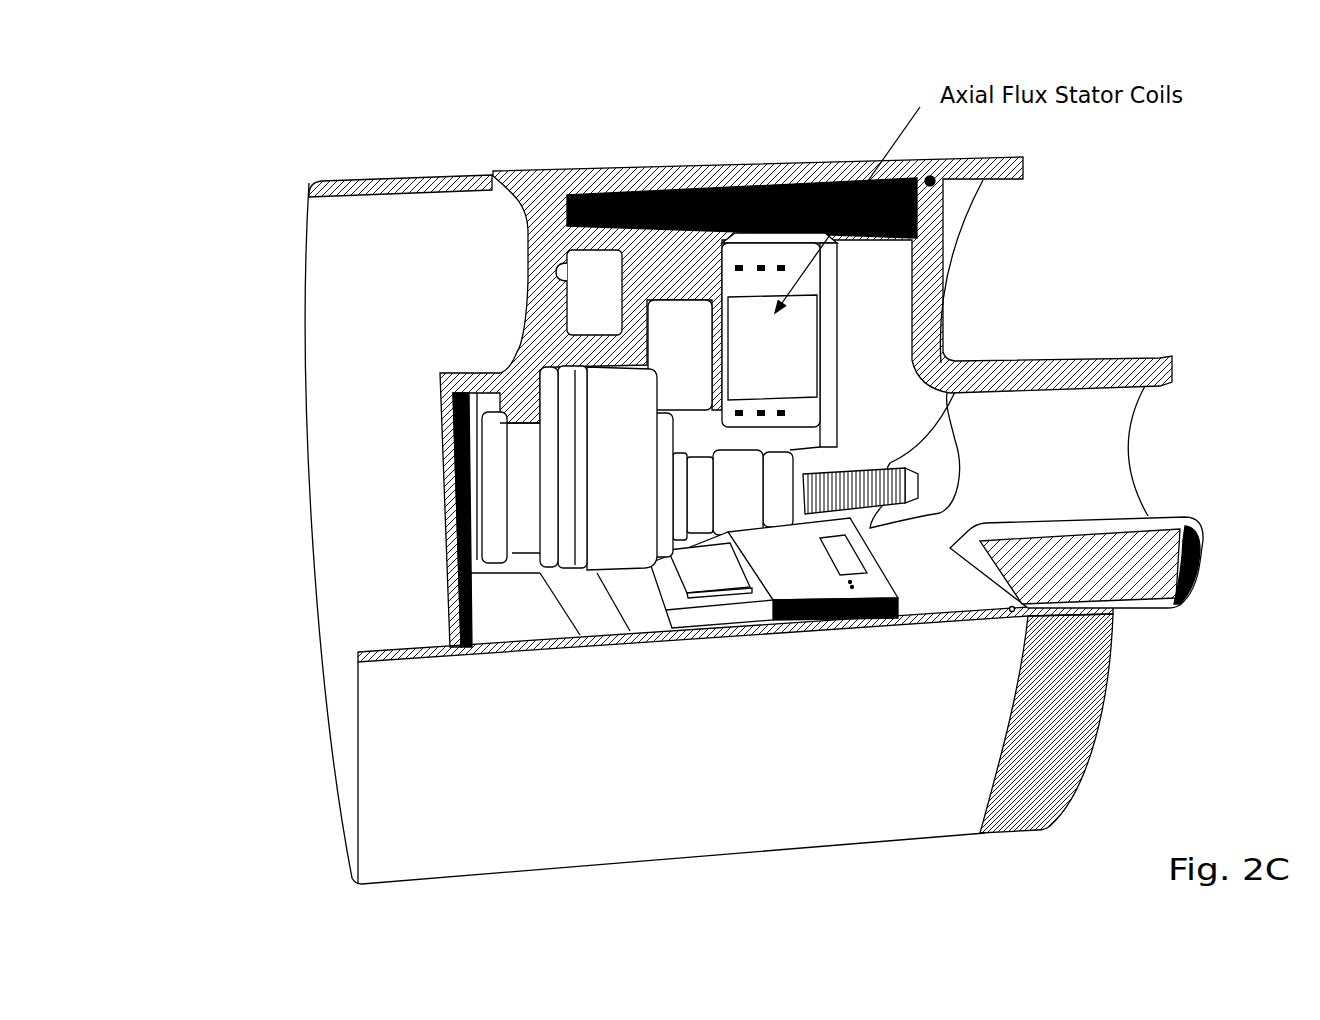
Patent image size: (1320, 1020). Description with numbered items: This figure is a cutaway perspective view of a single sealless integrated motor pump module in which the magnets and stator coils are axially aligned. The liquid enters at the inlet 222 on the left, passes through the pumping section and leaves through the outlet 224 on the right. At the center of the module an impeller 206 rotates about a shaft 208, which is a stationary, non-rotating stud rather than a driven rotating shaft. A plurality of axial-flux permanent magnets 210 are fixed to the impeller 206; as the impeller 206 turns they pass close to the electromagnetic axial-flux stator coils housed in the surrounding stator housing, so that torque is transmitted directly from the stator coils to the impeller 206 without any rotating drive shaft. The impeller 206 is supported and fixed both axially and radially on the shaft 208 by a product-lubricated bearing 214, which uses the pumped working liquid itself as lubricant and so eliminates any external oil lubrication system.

The impeller 206 is at (557, 397).
The shaft 208 is at (852, 473).
The permanent magnets 210 is at (700, 363).
The product-lubricated bearing 214 is at (766, 454).
The inlet 222 is at (398, 516).
The outlet 224 is at (1080, 471).